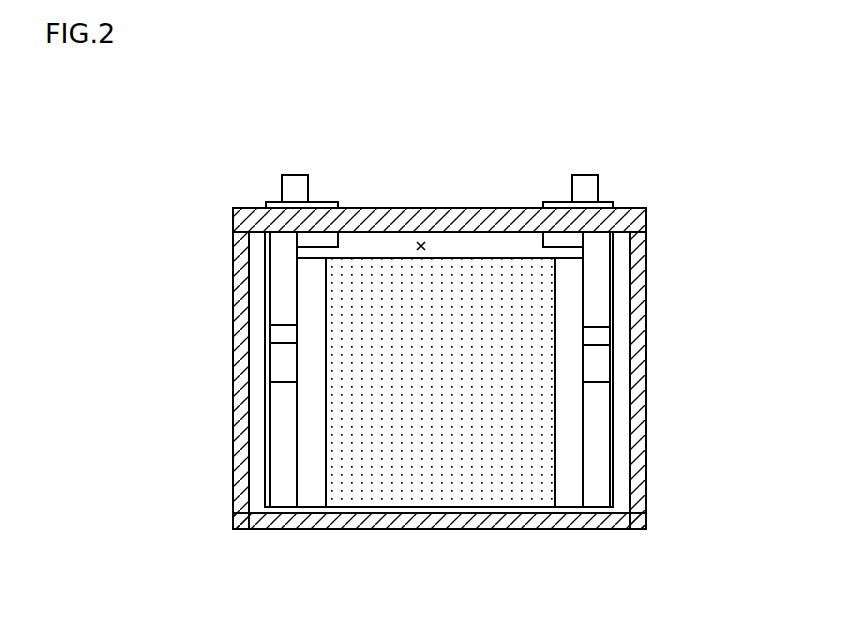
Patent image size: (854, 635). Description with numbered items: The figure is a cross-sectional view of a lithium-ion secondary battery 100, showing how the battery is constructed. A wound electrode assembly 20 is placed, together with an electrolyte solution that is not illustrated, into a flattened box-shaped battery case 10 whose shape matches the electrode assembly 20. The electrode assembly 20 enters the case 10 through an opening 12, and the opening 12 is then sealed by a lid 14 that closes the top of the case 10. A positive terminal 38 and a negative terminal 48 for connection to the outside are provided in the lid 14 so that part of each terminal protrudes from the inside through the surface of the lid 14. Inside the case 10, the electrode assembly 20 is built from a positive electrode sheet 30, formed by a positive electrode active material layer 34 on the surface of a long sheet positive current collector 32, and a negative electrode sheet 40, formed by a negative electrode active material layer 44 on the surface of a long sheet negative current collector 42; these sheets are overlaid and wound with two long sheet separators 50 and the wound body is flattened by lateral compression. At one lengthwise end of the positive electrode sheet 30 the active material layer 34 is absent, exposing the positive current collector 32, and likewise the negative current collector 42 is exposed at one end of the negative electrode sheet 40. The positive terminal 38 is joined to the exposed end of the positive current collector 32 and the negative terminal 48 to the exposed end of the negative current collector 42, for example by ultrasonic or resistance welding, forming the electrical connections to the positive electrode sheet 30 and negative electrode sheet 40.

The lithium-ion secondary battery 100 is at (203, 90).
The battery case 10 is at (647, 473).
The lid 14 is at (378, 208).
The opening 12 is at (421, 244).
The wound electrode assembly 20 is at (462, 257).
The positive electrode sheet 30 is at (310, 408).
The positive current collector 32 is at (295, 495).
The positive electrode active material layer 34 is at (386, 470).
The separators 50 is at (453, 490).
The negative electrode active material layer 44 is at (526, 470).
The negative electrode sheet 40 is at (588, 407).
The negative current collector 42 is at (579, 497).
The positive terminal 38 is at (293, 183).
The negative terminal 48 is at (585, 180).